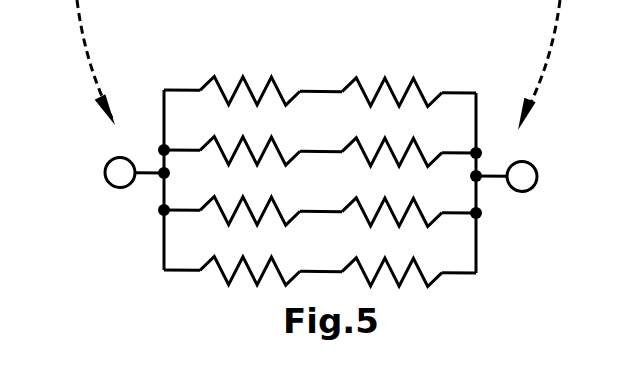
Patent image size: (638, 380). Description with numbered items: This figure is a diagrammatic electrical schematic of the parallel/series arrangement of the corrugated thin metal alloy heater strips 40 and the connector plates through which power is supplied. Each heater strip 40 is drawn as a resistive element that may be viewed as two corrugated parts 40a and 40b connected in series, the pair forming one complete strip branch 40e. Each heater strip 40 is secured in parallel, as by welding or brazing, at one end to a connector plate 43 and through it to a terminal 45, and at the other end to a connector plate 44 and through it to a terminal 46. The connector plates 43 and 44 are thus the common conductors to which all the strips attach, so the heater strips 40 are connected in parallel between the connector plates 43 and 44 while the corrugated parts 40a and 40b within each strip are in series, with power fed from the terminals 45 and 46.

The heater strip 40 is at (327, 170).
The corrugated part 40a is at (395, 100).
The corrugated part 40b is at (282, 94).
The resistor element (top branch) 40e is at (308, 79).
The connector plate 43 is at (478, 231).
The connector plate 44 is at (163, 243).
The terminal 45 is at (527, 162).
The terminal 46 is at (107, 163).